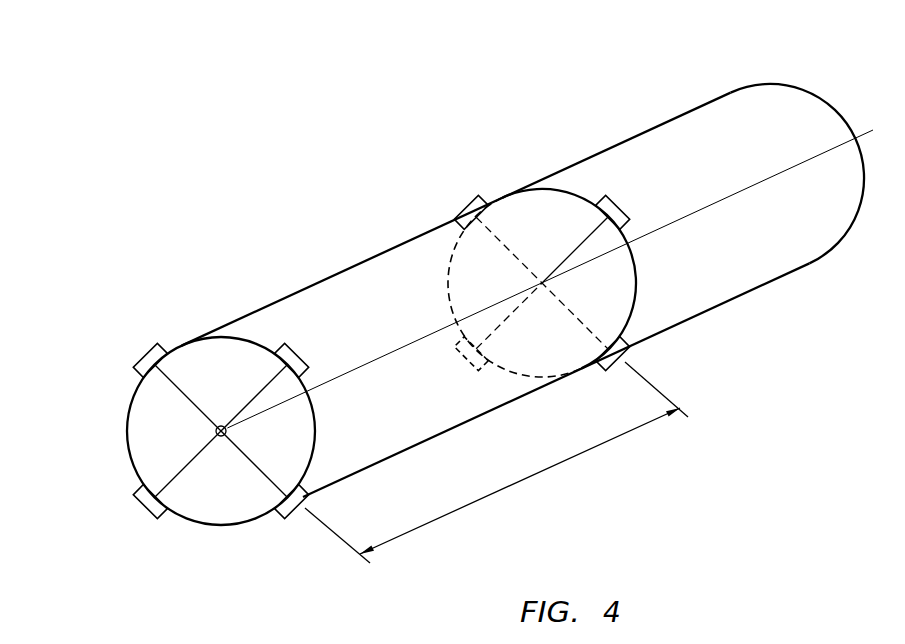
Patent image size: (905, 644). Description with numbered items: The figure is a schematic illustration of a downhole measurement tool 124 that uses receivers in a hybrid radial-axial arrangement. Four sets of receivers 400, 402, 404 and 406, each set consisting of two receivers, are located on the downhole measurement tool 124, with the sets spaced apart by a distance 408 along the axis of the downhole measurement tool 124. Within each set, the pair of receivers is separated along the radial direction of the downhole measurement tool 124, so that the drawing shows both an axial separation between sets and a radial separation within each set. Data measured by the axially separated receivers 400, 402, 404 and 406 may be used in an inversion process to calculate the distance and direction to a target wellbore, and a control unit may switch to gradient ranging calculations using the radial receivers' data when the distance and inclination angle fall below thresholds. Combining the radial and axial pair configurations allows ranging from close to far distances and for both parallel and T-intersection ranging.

The downhole measurement tool 124 is at (647, 118).
The receivers 400 is at (307, 510).
The receivers 402 is at (140, 364).
The receivers 404 is at (138, 502).
The receivers 406 is at (300, 352).
The distance 408 is at (473, 503).